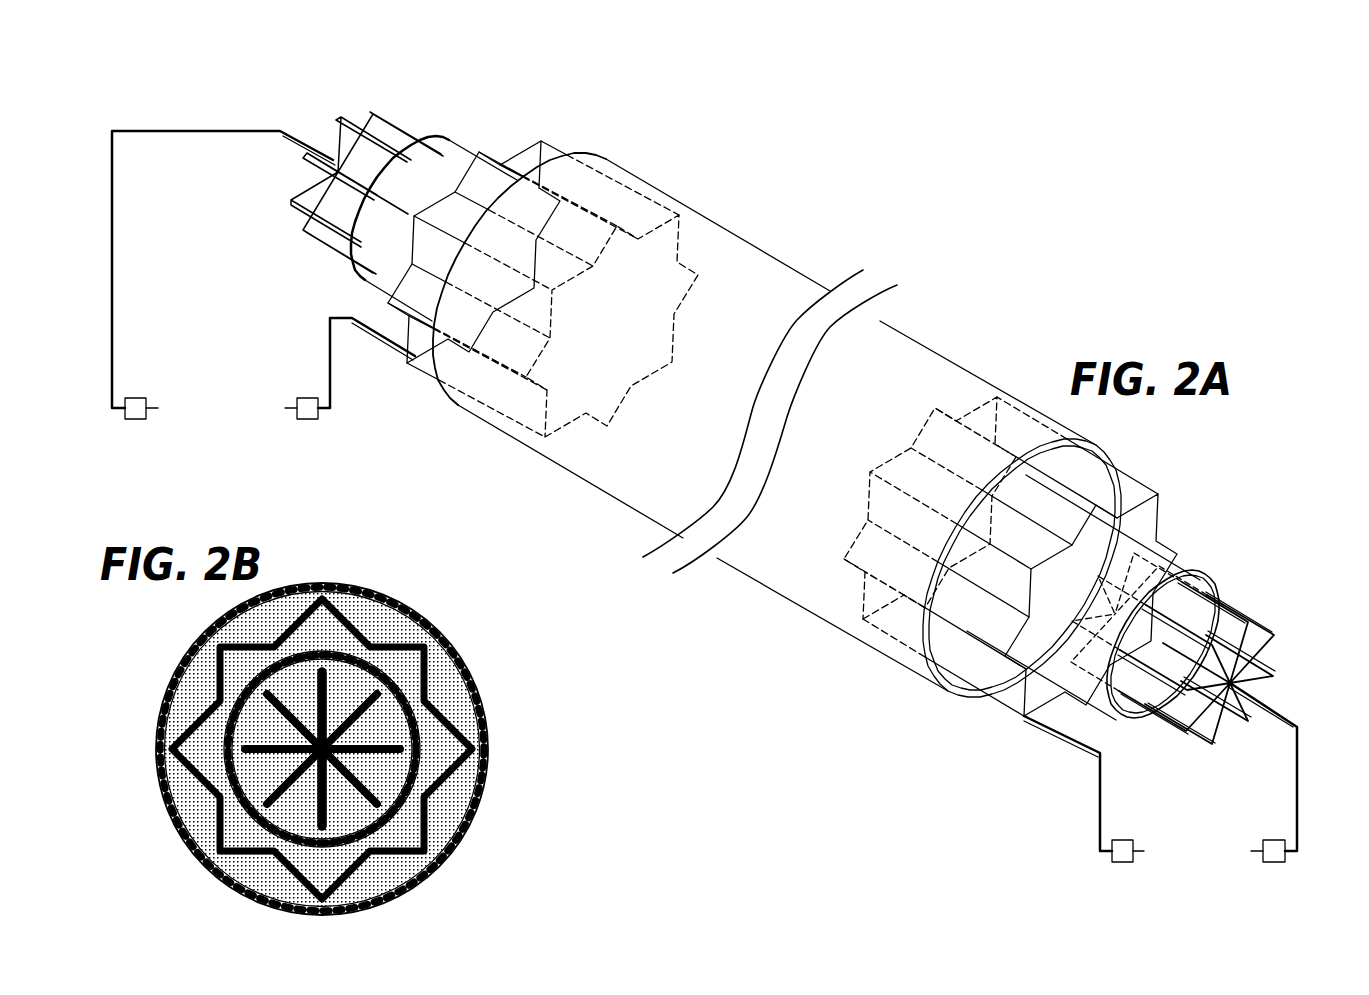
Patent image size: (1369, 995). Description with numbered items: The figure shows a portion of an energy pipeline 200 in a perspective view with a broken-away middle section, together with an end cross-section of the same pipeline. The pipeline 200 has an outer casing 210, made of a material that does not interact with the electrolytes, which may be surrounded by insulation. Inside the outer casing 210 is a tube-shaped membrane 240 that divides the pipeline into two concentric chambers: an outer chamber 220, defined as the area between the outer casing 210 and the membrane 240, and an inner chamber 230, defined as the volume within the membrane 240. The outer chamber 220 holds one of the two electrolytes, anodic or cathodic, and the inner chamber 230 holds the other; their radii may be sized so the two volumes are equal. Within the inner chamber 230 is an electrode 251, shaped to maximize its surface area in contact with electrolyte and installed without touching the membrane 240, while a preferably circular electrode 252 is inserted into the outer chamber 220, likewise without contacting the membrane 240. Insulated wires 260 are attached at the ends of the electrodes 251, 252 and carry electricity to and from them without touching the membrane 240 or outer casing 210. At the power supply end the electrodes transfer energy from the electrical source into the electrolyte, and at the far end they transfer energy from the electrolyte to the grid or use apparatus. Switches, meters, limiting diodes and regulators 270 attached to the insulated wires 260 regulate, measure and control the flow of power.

In FIG. 2A, the energy pipeline 200 is at (980, 158).
In FIG. 2B, the energy pipeline 200 is at (440, 578).
In FIG. 2A, the outer casing 210 is at (950, 343).
In FIG. 2B, the outer casing 210 is at (488, 722).
In FIG. 2A, the outer chamber 220 is at (970, 663).
In FIG. 2B, the outer chamber 220 is at (445, 684).
In FIG. 2A, the inner chamber 230 is at (1130, 705).
In FIG. 2B, the inner chamber 230 is at (348, 803).
In FIG. 2A, the membrane 240 is at (1207, 585).
In FIG. 2B, the membrane 240 is at (420, 748).
In FIG. 2A, the electrode (inner) 251 is at (385, 130).
In FIG. 2B, the electrode (inner) 251 is at (318, 832).
In FIG. 2A, the electrode (outer) 252 is at (548, 157).
In FIG. 2B, the electrode (outer) 252 is at (220, 840).
In FIG. 2A, the insulated wires 260 is at (175, 131).
In FIG. 2A, the switches, meters, limiting diodes, regulators 270 is at (137, 397).